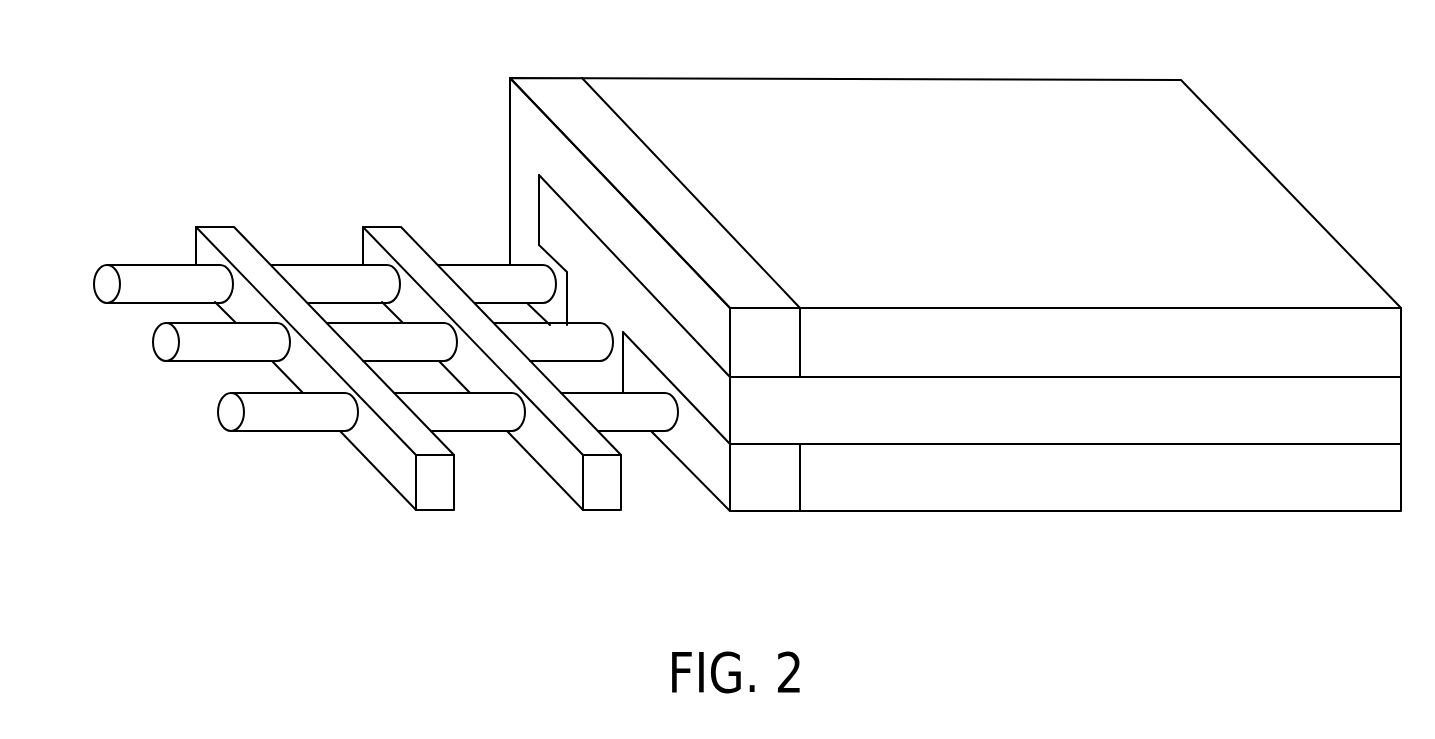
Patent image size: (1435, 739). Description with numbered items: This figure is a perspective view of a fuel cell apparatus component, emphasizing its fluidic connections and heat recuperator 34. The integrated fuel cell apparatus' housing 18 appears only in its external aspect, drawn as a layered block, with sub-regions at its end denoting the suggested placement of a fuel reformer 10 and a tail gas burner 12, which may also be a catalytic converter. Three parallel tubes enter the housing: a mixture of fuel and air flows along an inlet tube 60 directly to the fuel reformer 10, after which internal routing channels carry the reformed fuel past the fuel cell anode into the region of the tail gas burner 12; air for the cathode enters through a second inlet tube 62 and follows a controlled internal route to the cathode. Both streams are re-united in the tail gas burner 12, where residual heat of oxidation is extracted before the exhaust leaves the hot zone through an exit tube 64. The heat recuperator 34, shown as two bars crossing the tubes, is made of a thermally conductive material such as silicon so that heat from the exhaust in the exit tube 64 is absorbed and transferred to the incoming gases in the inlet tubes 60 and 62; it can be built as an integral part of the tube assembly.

The fuel reformer 10 is at (778, 514).
The tail gas burner 12 is at (556, 88).
The housing 18 is at (823, 77).
The heat recuperator 34 is at (210, 226).
The inlet tube 60 is at (240, 430).
The inlet tube 62 is at (188, 363).
The exit tube 64 is at (124, 304).